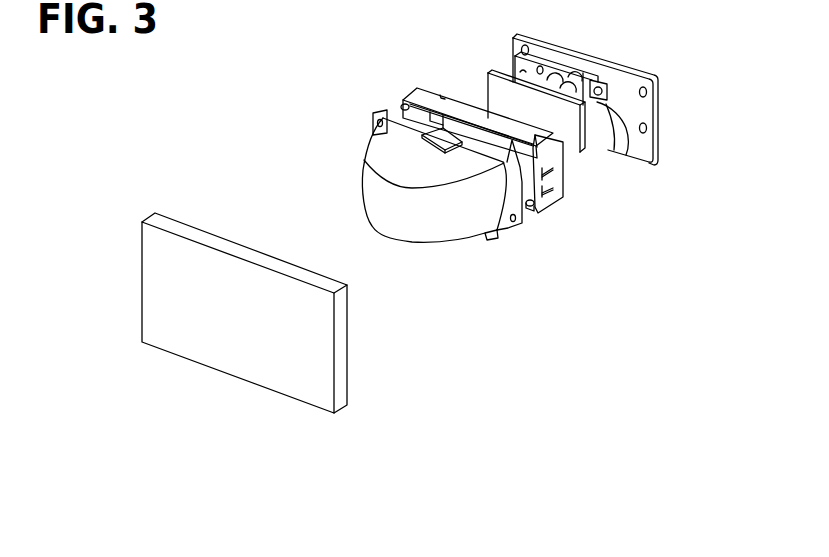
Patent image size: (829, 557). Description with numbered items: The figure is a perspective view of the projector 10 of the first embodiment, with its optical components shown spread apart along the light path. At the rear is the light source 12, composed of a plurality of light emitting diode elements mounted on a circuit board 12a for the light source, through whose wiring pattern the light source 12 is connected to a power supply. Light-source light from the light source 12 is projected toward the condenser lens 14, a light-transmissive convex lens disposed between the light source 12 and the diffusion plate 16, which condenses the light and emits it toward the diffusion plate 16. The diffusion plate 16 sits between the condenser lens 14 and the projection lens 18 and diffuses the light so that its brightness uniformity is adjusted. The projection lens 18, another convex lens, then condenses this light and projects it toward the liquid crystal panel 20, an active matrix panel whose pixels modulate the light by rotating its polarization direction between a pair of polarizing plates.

The projector 10 is at (331, 105).
The light source 12 is at (630, 157).
The circuit board for the light source 12a is at (645, 110).
The condenser lens 14 is at (603, 150).
The diffusion plate 16 is at (577, 152).
The projection lens 18 is at (438, 230).
The liquid crystal panel 20 is at (343, 374).